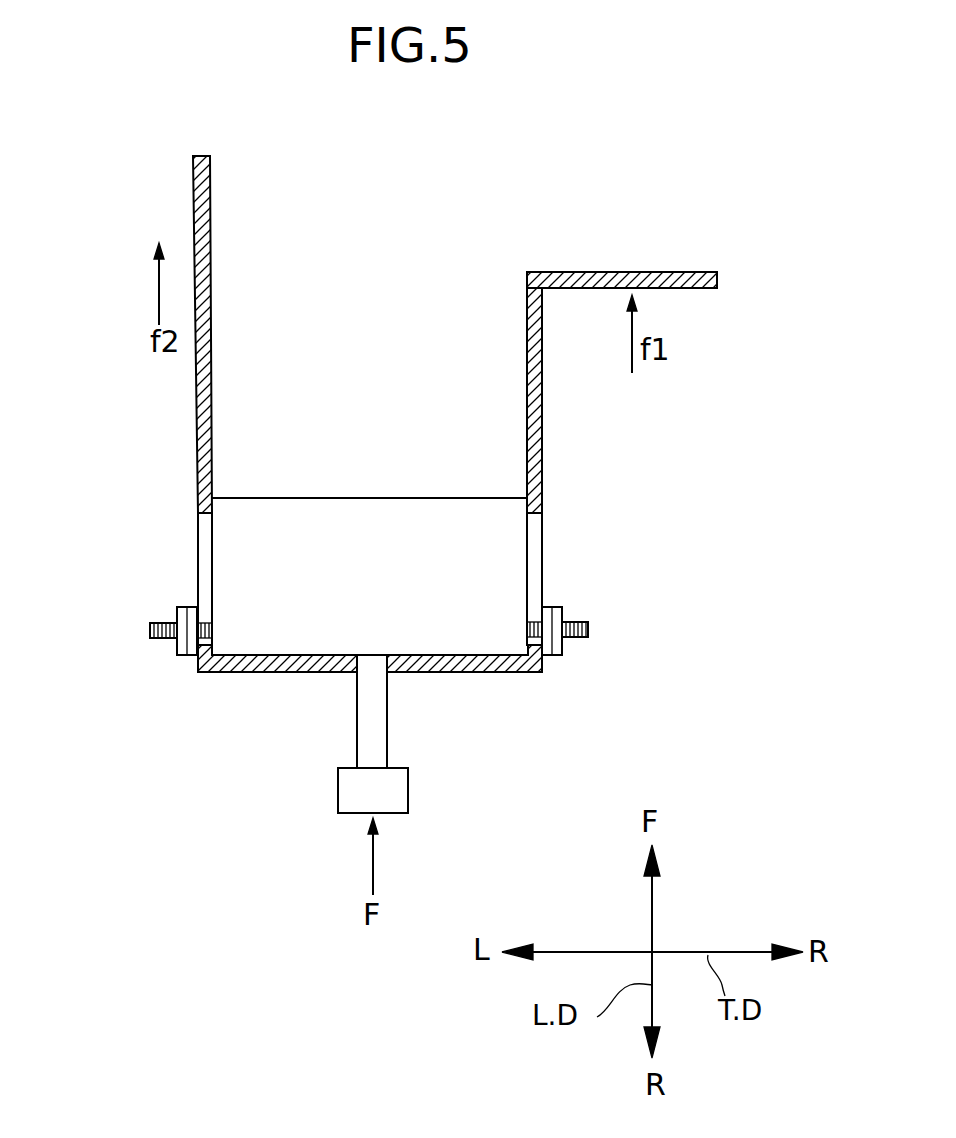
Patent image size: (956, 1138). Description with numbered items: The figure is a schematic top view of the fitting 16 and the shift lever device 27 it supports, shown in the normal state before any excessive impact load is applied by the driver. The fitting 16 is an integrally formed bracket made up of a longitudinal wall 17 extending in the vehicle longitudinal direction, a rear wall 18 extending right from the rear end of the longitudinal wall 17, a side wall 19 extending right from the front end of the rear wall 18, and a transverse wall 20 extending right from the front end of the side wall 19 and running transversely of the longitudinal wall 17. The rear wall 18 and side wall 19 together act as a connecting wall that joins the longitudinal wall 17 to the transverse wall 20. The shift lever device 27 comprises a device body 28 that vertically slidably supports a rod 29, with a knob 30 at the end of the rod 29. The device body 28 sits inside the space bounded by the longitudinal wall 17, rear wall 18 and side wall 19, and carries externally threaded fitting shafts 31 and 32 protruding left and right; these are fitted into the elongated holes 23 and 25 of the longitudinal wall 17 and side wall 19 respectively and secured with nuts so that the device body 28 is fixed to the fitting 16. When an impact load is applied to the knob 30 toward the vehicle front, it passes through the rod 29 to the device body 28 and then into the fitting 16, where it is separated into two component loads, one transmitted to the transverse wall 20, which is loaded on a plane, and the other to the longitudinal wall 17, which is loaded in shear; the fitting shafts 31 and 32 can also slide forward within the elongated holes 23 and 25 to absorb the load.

The fitting 16 is at (412, 465).
The longitudinal wall 17 is at (197, 201).
The rear wall 18 is at (212, 673).
The side wall 19 is at (541, 478).
The transverse wall 20 is at (614, 272).
The elongated hole 23 is at (203, 546).
The elongated hole 25 is at (536, 553).
The shift lever device 27 is at (380, 734).
The device body 28 is at (357, 546).
The rod 29 is at (387, 733).
The knob 30 is at (408, 790).
The fitting shaft 31 is at (590, 627).
The fitting shaft 32 is at (148, 629).